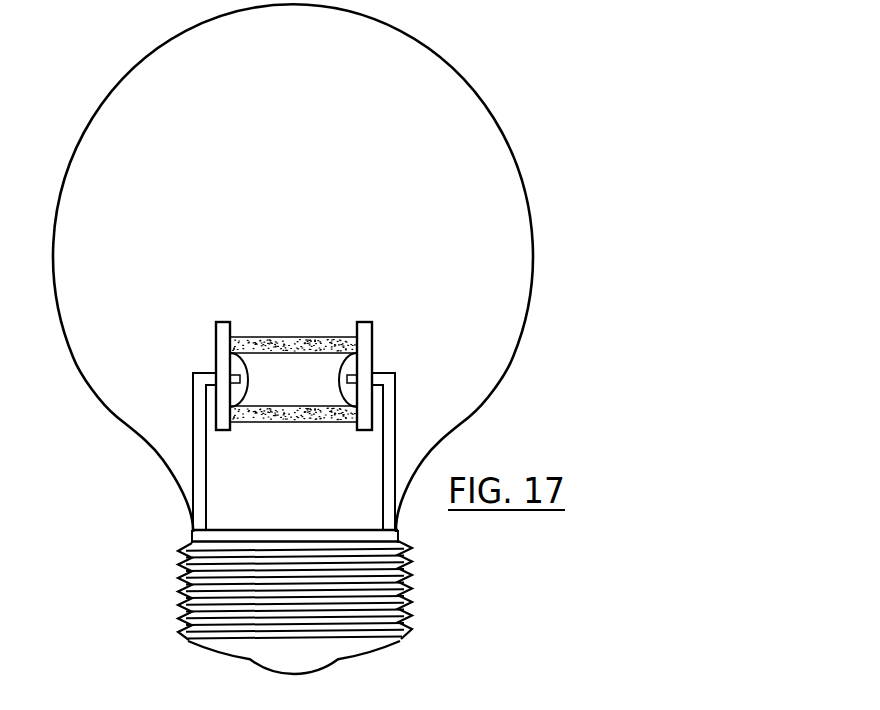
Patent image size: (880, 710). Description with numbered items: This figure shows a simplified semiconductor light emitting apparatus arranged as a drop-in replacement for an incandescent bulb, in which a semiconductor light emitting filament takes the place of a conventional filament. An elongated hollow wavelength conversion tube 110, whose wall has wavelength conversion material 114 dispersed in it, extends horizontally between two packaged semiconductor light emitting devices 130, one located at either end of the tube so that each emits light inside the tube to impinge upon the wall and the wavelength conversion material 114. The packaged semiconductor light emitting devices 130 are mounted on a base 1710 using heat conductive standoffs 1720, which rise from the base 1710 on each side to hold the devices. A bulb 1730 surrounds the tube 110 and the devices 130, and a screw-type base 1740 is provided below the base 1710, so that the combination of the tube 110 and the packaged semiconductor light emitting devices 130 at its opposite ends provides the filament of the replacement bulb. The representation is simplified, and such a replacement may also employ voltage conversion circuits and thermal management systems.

The bulb 1730 is at (455, 62).
The elongated hollow wavelength conversion tube 110 is at (293, 337).
The wavelength conversion material 114 is at (322, 337).
The packaged semiconductor light emitting device 130 is at (222, 306).
The heat conductive standoff 1720 is at (208, 487).
The base 1710 is at (295, 537).
The screw-type base 1740 is at (405, 600).